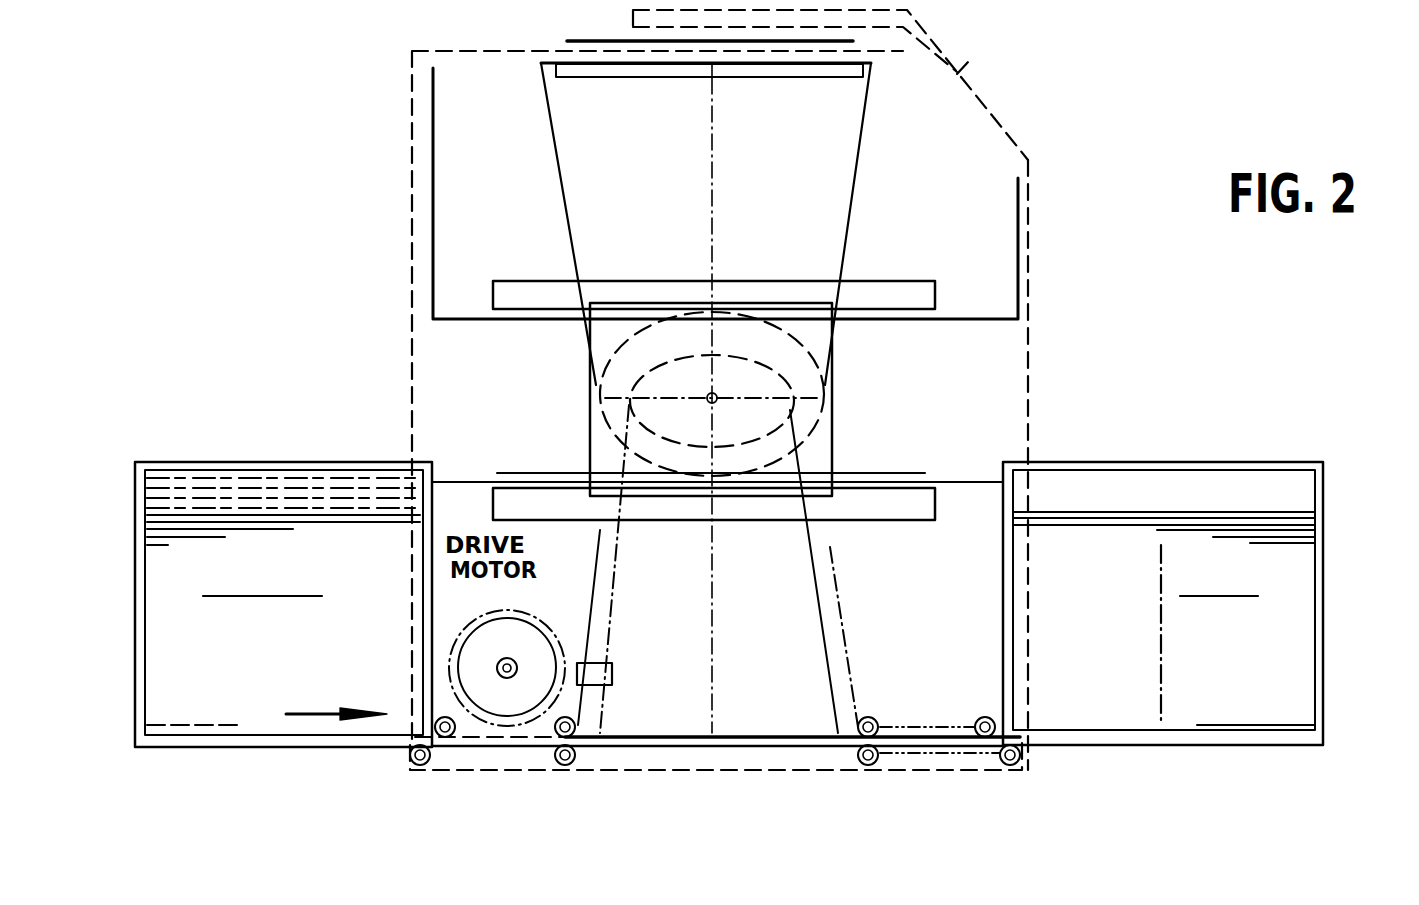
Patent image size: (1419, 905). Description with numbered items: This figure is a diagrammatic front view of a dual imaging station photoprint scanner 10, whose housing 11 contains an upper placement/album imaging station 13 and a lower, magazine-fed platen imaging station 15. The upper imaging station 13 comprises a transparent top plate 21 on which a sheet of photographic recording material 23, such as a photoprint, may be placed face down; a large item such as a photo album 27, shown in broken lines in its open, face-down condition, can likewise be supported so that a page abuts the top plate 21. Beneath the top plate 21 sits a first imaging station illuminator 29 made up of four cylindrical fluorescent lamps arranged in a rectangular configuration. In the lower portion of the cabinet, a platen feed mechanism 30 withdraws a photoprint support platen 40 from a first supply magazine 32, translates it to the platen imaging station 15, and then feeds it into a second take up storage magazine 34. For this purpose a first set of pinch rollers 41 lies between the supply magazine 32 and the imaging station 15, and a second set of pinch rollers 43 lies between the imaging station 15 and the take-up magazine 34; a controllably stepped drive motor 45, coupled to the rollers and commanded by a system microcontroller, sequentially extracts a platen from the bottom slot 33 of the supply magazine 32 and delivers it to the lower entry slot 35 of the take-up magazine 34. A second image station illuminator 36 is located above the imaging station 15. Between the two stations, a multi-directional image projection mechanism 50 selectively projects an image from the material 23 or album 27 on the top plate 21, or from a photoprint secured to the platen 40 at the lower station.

The dual imaging station photoprint scanner 10 is at (1033, 233).
The housing 11 is at (1031, 300).
The upper imaging station 13 is at (640, 77).
The platen imaging station 15 is at (765, 757).
The top plate 21 is at (560, 62).
The sheet of photographic recording material 23 is at (615, 40).
The photo album 27 is at (955, 46).
The first imaging station illuminator 29 is at (893, 280).
The platen feed mechanism 30 is at (614, 672).
The first supply magazine 32 is at (168, 468).
The bottom slot 33 is at (437, 713).
The second take up storage magazine 34 is at (1323, 547).
The lower entry slot 35 is at (996, 722).
The second image station illuminator 36 is at (898, 510).
The platen 40 is at (637, 735).
The first set of pinch rollers 41 is at (413, 762).
The second set of pinch rollers 43 is at (910, 735).
The drive motor 45 is at (535, 613).
The multi-directional image projection mechanism 50 is at (836, 396).